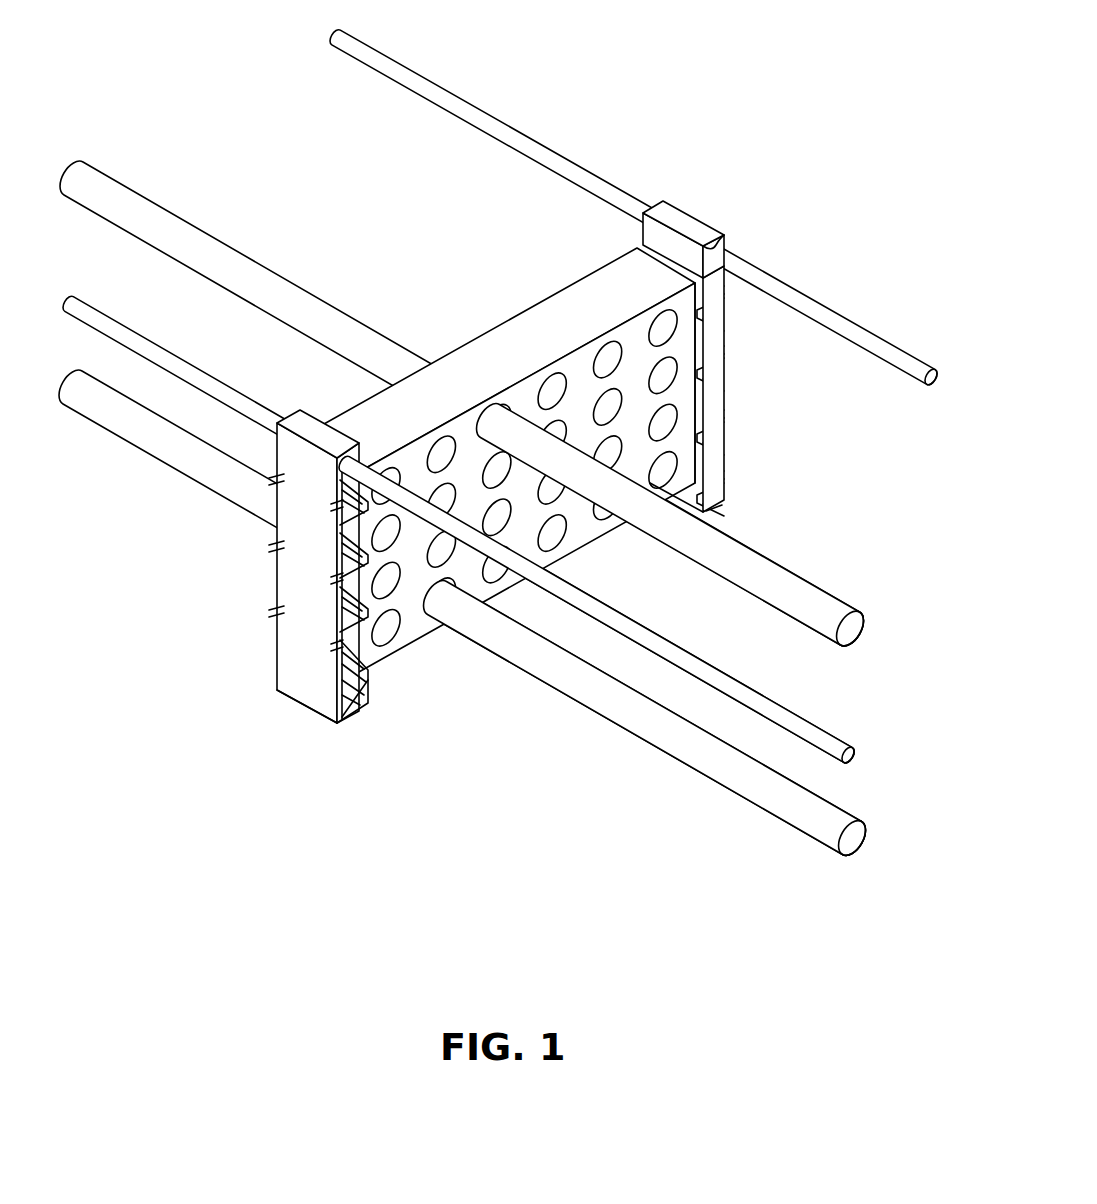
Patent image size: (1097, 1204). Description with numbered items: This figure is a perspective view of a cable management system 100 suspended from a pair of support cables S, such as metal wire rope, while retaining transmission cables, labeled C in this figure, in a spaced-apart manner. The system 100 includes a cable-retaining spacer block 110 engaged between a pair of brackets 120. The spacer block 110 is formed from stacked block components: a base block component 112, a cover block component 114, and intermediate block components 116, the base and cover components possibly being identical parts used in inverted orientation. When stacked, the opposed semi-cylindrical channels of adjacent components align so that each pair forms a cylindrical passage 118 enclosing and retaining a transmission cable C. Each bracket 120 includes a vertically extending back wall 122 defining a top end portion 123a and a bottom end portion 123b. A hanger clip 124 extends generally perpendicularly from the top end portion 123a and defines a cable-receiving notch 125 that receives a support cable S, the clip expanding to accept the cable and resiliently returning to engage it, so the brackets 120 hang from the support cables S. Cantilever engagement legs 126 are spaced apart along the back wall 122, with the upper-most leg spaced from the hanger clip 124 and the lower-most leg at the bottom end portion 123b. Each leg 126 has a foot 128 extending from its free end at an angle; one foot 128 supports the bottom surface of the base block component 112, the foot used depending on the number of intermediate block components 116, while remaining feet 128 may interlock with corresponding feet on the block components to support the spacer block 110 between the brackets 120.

The cable management system 100 is at (727, 57).
The cable-retaining spacer block 110 is at (460, 341).
The base block component 112 is at (405, 633).
The cover block component 114 is at (410, 463).
The intermediate block components 116 is at (686, 395).
The cylindrical passage 118 is at (497, 403).
The bracket 120 is at (704, 208).
The back wall 122 is at (293, 650).
The top end portion 123a is at (297, 423).
The bottom end portion 123b is at (303, 708).
The hanger clip 124 is at (672, 213).
The cable-receiving notch 125 is at (708, 243).
The cantilever engagement legs 126 is at (703, 455).
The foot 128 is at (698, 305).
The support cable S is at (880, 337).
The conduit C is at (700, 727).